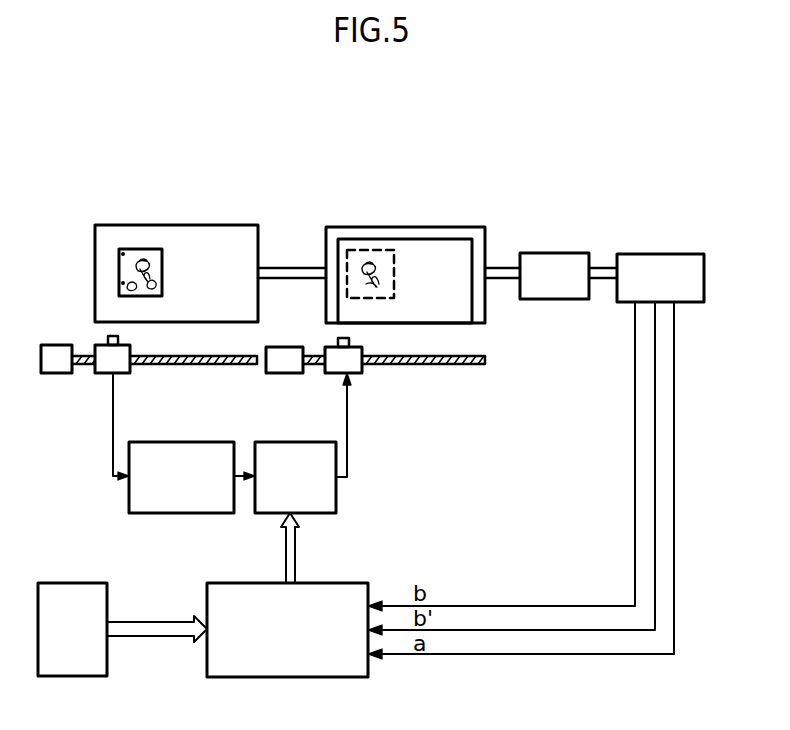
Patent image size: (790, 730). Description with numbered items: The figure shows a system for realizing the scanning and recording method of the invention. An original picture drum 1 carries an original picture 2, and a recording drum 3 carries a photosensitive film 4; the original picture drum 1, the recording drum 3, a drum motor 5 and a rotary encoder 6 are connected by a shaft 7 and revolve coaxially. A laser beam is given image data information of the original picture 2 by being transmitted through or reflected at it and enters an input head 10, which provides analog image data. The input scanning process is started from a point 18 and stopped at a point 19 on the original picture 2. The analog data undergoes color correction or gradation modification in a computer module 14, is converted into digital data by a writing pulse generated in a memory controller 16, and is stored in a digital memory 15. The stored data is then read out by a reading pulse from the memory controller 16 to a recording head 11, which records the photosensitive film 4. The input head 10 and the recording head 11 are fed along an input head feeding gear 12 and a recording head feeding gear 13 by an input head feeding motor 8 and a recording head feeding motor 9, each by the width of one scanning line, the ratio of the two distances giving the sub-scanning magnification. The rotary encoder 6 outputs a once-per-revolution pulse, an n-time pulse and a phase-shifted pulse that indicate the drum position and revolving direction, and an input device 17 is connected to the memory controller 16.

The original picture drum 1 is at (202, 233).
The original picture 2 is at (140, 249).
The recording drum 3 is at (360, 227).
The photosensitive film 4 is at (428, 239).
The drum motor 5 is at (568, 253).
The rotary encoder 6 is at (665, 254).
The shaft 7 is at (300, 268).
The input head feeding motor 8 is at (57, 373).
The recording head feeding motor 9 is at (290, 373).
The input head 10 is at (103, 373).
The recording head 11 is at (362, 373).
The input head feeding gear 12 is at (208, 364).
The recording head feeding gear 13 is at (462, 364).
The computer module 14 is at (200, 513).
The digital memory 15 is at (333, 486).
The memory controller 16 is at (357, 583).
The input device 17 is at (92, 583).
The point 18 is at (122, 254).
The point 19 is at (122, 283).